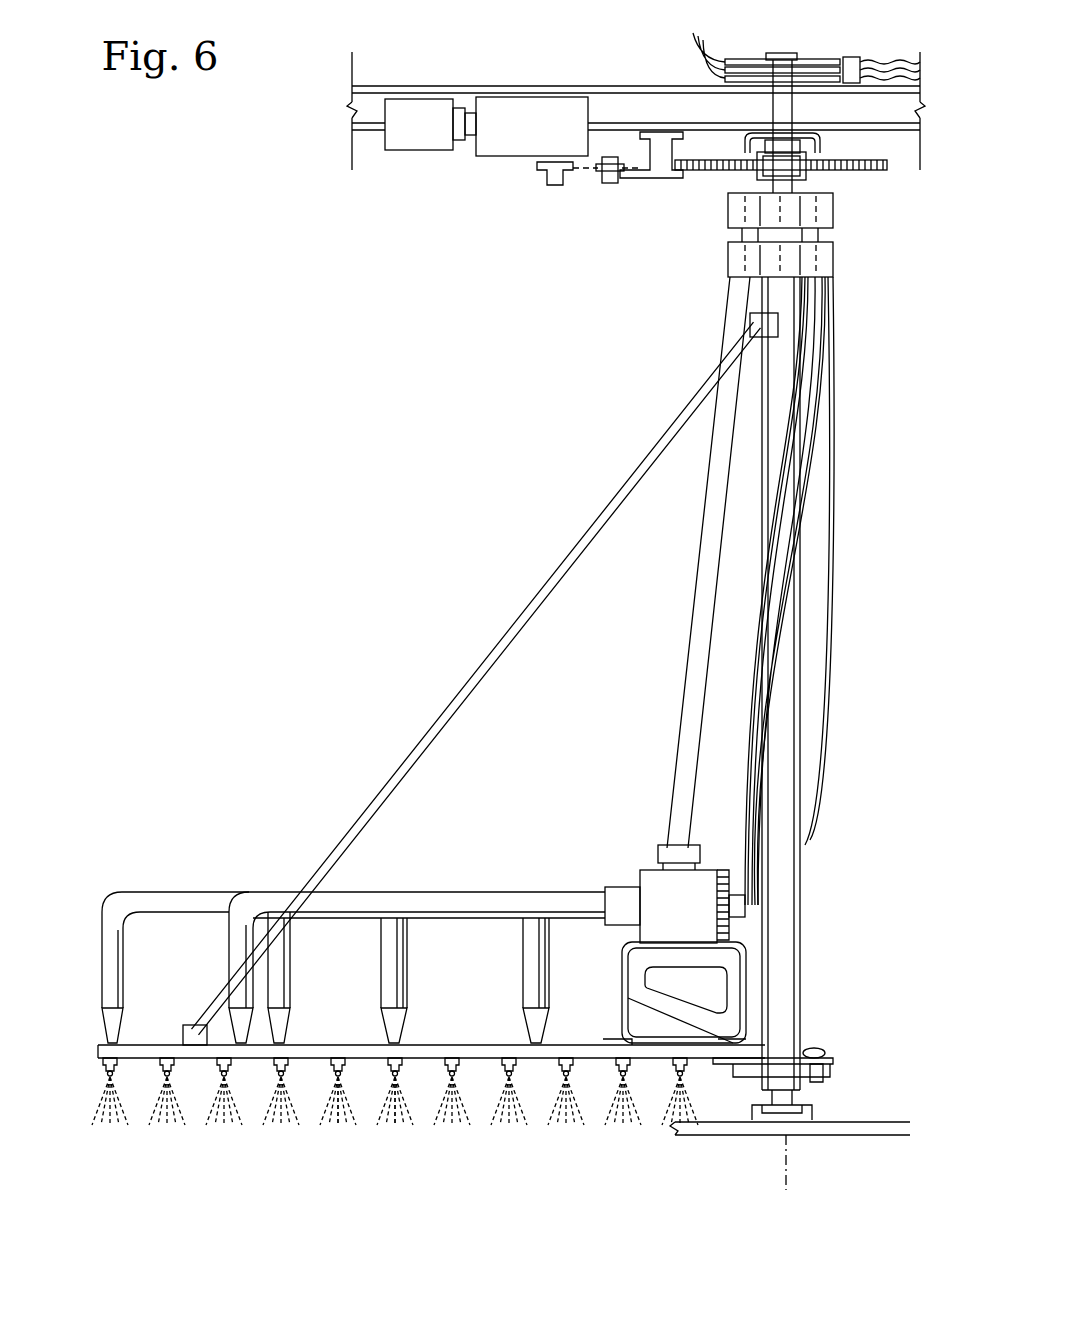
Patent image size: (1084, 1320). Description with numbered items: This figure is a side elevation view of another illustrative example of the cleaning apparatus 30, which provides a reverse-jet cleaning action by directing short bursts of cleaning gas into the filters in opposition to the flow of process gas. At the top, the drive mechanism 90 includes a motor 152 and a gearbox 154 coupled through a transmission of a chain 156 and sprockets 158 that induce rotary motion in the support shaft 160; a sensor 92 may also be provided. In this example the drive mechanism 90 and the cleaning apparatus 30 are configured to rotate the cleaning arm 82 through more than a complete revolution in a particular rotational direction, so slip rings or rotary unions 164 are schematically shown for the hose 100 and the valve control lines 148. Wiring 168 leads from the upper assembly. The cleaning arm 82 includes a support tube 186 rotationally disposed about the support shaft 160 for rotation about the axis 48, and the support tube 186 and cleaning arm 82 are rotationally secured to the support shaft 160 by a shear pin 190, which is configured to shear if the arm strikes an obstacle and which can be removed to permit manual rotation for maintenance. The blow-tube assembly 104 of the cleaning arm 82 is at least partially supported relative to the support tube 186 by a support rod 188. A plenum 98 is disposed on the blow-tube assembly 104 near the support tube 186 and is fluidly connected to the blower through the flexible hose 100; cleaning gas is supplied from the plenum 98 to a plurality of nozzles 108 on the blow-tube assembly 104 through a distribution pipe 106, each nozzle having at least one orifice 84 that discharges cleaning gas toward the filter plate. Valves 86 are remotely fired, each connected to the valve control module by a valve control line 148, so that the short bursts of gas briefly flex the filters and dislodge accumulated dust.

The cleaning apparatus 30 is at (170, 173).
The axis 48 is at (788, 1145).
The cleaning arm 82 is at (252, 489).
The orifices 84 is at (392, 1072).
The valves 86 is at (737, 932).
The drive mechanism 90 is at (416, 208).
The sensor 92 is at (842, 37).
The plenum 98 is at (643, 873).
The hose 100 is at (692, 697).
The blow-tube assembly 104 is at (96, 1051).
The distribution pipe 106 is at (277, 980).
The nozzles 108 is at (222, 1070).
The valve control line 148 is at (830, 697).
The motor 152 is at (407, 140).
The gearbox 154 is at (488, 140).
The chain 156 is at (620, 195).
The sprockets 158 is at (543, 185).
The support shaft 160 is at (795, 192).
The rotary unions 164 is at (840, 232).
The wire harness 168 is at (756, 44).
The support tube 186 is at (808, 1003).
The support rod 188 is at (555, 583).
The shear pin 190 is at (818, 1048).